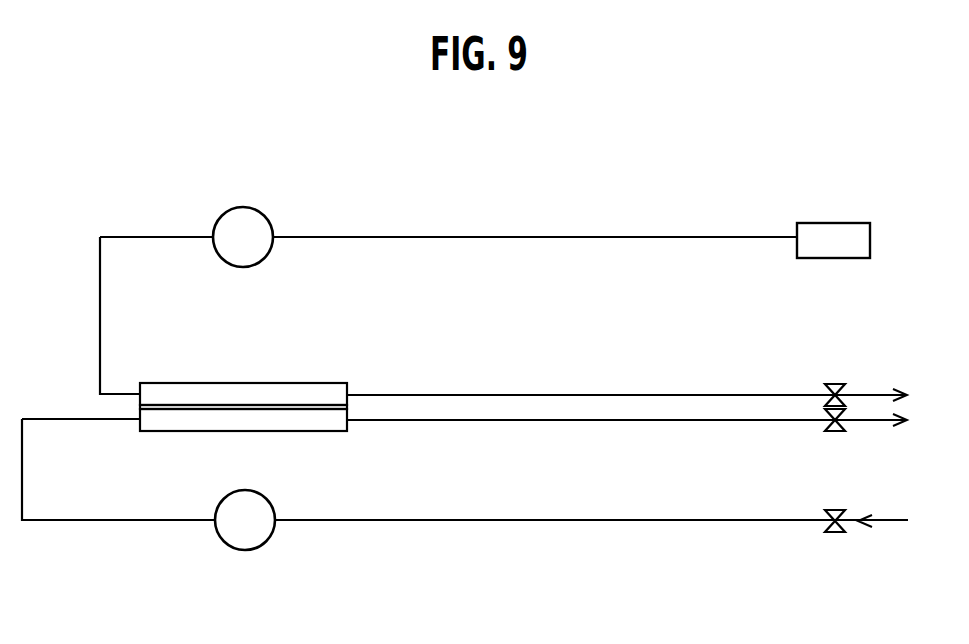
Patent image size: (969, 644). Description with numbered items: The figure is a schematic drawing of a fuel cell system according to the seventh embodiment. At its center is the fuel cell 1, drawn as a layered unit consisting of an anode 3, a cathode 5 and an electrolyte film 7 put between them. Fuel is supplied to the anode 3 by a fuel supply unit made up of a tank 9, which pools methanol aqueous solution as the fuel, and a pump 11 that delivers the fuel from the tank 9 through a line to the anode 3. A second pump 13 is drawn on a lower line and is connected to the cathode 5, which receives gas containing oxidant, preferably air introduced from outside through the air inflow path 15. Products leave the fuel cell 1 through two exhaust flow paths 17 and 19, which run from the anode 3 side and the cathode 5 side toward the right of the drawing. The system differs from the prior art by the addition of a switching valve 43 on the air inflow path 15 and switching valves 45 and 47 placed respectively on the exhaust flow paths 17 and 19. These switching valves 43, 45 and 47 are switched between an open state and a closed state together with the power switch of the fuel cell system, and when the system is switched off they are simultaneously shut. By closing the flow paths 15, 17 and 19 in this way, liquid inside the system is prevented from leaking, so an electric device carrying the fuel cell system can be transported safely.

The fuel cell 1 is at (260, 399).
The anode 3 is at (235, 383).
The cathode 5 is at (195, 431).
The electrolyte film 7 is at (290, 410).
The tank 9 is at (836, 223).
The pump 11 is at (243, 207).
The pump 13 is at (245, 551).
The air inflow path 15 is at (890, 522).
The exhaust flow path 17 is at (876, 394).
The exhaust flow path 19 is at (873, 422).
The switching valve 43 is at (832, 532).
The switching valve 45 is at (832, 385).
The switching valve 47 is at (834, 431).